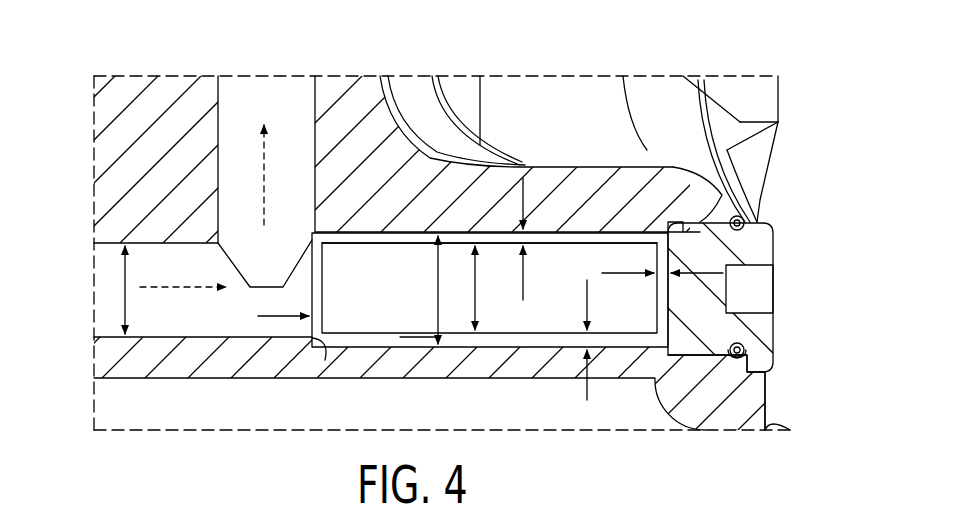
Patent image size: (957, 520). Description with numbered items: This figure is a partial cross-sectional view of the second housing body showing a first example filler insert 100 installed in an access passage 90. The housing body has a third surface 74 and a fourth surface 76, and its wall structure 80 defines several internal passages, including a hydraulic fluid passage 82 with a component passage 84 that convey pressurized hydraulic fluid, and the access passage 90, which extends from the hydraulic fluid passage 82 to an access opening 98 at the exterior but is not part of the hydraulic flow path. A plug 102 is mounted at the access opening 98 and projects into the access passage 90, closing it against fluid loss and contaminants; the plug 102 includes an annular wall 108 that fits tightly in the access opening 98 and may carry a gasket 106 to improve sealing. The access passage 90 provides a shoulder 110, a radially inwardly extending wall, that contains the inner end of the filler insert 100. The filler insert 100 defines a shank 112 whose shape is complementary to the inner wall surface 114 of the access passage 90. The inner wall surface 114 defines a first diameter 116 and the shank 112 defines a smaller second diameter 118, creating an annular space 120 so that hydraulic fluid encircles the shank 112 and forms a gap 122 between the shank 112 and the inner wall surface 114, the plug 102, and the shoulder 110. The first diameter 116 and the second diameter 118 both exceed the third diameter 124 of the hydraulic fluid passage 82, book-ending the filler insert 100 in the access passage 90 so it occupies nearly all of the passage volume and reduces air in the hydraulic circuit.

The third surface 74 is at (770, 405).
The fourth surface 76 is at (290, 378).
The wall structure 80 is at (124, 215).
The hydraulic fluid passage 82 is at (112, 337).
The component passage 84 is at (315, 100).
The access passage 90 is at (370, 228).
The access opening 98 is at (740, 150).
The filler insert 100 is at (371, 298).
The plug 102 is at (790, 249).
The gasket 106 is at (773, 220).
The annular wall 108 is at (677, 222).
The shoulder 110 is at (325, 360).
The shank 112 is at (533, 342).
The inner wall surface 114 is at (410, 238).
The first diameter 116 is at (437, 268).
The second diameter 118 is at (477, 288).
The annular space 120 is at (417, 337).
The gap 122 is at (602, 273).
The third diameter 124 is at (128, 273).